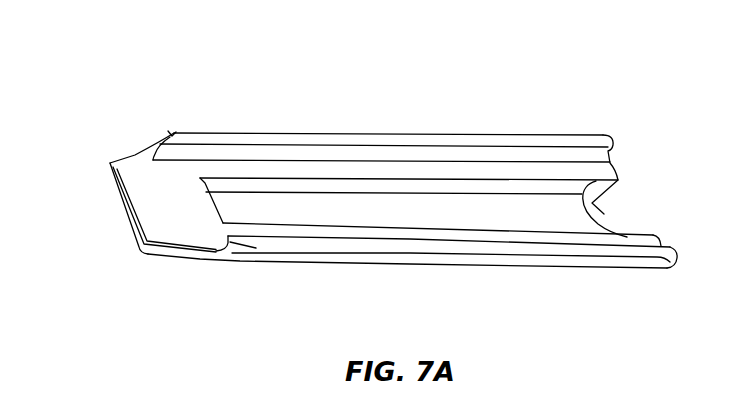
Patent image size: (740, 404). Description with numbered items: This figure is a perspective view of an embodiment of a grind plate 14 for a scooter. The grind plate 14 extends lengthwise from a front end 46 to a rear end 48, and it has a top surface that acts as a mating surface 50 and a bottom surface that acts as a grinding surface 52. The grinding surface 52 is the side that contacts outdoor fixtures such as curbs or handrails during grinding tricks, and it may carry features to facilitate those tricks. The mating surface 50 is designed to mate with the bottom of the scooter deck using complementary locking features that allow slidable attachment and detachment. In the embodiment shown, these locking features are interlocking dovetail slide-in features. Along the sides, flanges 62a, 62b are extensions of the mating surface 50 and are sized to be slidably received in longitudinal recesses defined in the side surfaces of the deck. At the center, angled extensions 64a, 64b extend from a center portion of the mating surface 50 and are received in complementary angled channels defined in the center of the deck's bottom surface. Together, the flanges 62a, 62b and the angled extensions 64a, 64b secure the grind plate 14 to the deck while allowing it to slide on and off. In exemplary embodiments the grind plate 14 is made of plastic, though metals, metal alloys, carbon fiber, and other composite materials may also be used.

The grind plate 14 is at (171, 70).
The front end 46 is at (122, 205).
The rear end 48 is at (604, 214).
The mating surface 50 is at (407, 200).
The grinding surface 52 is at (138, 248).
The flange 62a is at (168, 131).
The flange 62b is at (243, 252).
The angled extension 64a is at (204, 184).
The angled extension 64b is at (232, 213).